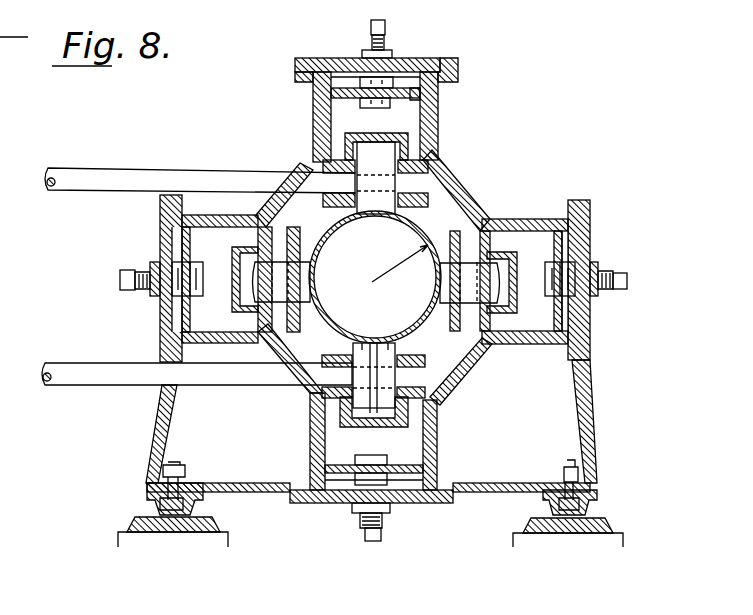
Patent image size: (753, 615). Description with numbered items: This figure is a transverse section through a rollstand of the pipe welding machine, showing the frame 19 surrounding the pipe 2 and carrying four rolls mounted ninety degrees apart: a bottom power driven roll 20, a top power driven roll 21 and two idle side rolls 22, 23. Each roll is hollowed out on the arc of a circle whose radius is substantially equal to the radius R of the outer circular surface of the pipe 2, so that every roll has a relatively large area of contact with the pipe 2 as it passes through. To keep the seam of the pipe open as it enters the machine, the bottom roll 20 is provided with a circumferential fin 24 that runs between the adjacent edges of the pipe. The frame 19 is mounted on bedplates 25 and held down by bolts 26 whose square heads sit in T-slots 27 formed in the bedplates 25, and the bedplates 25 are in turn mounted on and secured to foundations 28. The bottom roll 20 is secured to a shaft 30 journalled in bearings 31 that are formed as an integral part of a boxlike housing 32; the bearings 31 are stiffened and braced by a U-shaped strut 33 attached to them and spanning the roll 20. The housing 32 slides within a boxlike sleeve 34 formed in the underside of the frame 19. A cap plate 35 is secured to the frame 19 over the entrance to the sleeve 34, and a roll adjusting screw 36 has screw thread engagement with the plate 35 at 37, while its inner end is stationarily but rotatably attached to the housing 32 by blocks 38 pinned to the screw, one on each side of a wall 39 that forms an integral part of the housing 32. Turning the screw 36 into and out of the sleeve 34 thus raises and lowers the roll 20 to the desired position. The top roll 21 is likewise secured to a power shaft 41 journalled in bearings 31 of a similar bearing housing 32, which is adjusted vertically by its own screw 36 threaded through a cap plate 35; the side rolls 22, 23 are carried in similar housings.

The pipe 2 is at (442, 238).
The radius of the outer circular surface of the pipe R is at (400, 263).
The frame 19 is at (458, 180).
The bottom power driven roll 20 is at (366, 345).
The top power driven roll 21 is at (377, 205).
The idle side roll 22 is at (302, 284).
The idle side roll 23 is at (446, 287).
The circumferential fin 24 is at (378, 345).
The bedplate 25 is at (150, 520).
The bolt 26 is at (162, 482).
The T-slot 27 is at (160, 503).
The foundation 28 is at (118, 537).
The shaft 30 is at (105, 385).
The bearings 31 is at (328, 201).
The boxlike housing 32 is at (313, 115).
The U-shaped strut 33 is at (388, 136).
The boxlike sleeve 34 is at (440, 120).
The cap plate 35 is at (330, 58).
The roll adjusting screw 36 is at (386, 26).
The screw thread engagement 37 is at (412, 60).
The blocks 38 is at (334, 97).
The wall 39 is at (433, 96).
The power shaft 41 is at (93, 168).